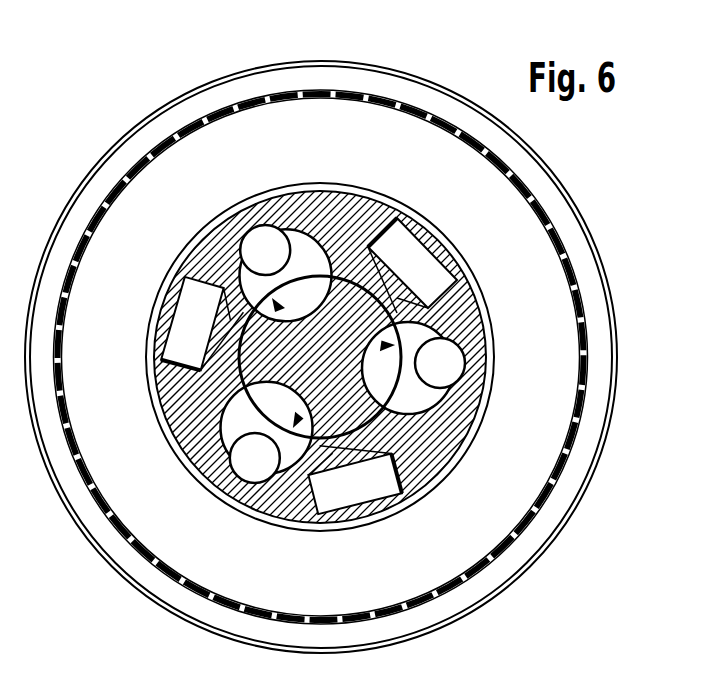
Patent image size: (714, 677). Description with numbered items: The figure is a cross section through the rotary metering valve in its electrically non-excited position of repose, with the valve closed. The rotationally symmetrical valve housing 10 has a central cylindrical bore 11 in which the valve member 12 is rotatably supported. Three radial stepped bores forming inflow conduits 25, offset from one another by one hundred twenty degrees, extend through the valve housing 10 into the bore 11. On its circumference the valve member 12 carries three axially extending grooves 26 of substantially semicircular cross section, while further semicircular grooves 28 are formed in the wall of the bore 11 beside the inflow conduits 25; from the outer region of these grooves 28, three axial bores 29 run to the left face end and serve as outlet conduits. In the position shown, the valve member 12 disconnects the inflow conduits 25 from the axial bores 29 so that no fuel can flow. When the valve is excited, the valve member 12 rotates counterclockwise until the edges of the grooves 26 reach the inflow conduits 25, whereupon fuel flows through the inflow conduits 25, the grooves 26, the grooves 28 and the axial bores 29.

The valve housing 10 is at (278, 490).
The cylindrical bore 11 is at (240, 403).
The valve member 12 is at (343, 412).
The inflow conduits 25 is at (422, 265).
The grooves 26 is at (258, 305).
The grooves 28 is at (306, 245).
The axial bores 29 is at (265, 240).